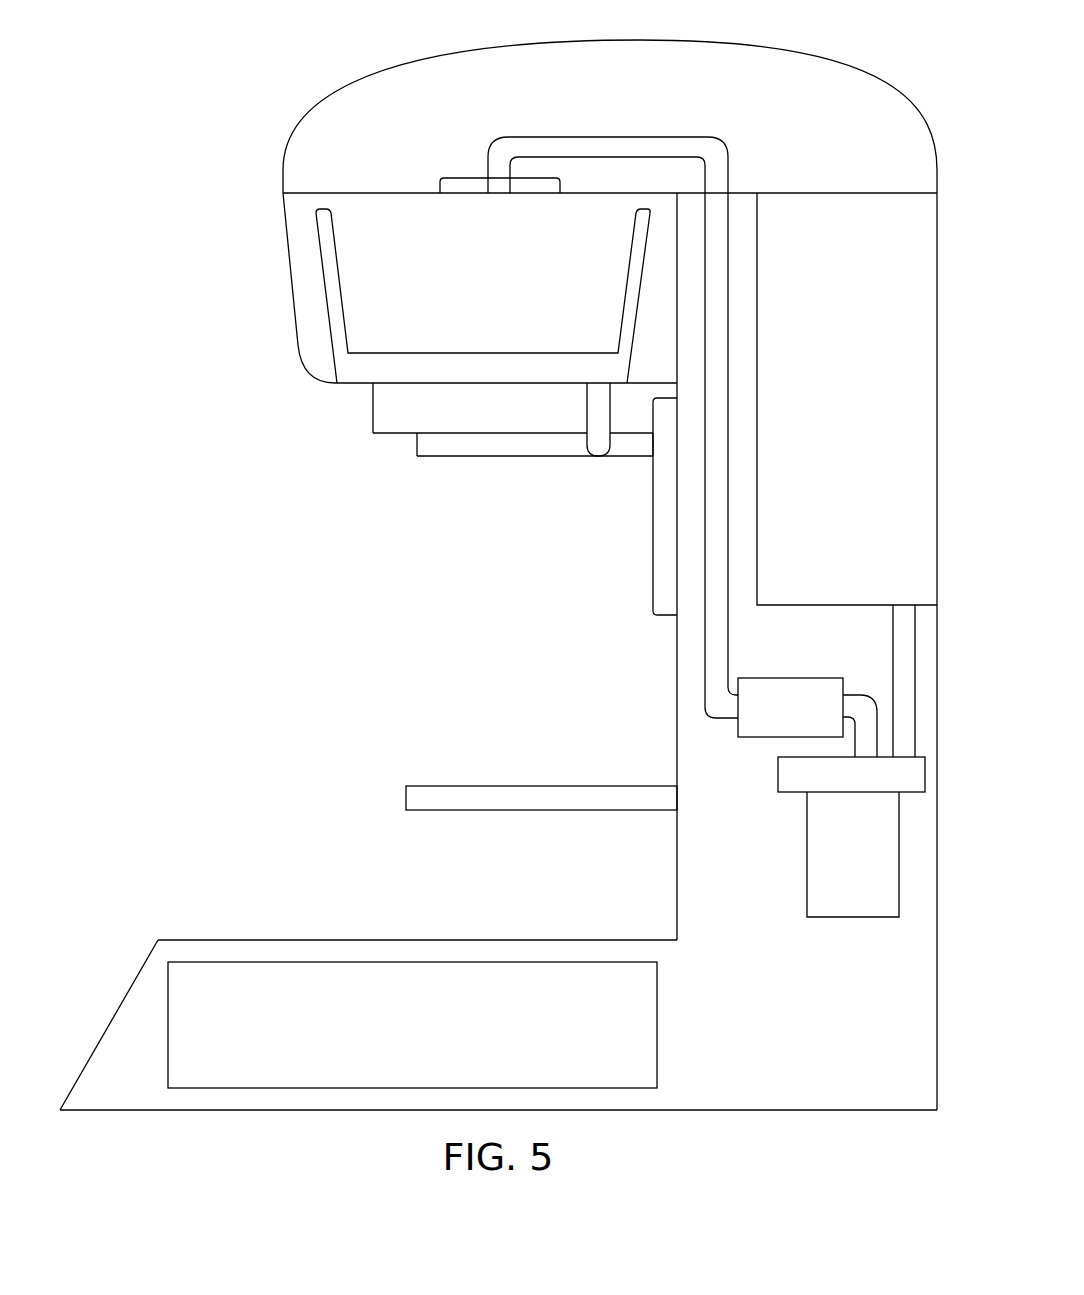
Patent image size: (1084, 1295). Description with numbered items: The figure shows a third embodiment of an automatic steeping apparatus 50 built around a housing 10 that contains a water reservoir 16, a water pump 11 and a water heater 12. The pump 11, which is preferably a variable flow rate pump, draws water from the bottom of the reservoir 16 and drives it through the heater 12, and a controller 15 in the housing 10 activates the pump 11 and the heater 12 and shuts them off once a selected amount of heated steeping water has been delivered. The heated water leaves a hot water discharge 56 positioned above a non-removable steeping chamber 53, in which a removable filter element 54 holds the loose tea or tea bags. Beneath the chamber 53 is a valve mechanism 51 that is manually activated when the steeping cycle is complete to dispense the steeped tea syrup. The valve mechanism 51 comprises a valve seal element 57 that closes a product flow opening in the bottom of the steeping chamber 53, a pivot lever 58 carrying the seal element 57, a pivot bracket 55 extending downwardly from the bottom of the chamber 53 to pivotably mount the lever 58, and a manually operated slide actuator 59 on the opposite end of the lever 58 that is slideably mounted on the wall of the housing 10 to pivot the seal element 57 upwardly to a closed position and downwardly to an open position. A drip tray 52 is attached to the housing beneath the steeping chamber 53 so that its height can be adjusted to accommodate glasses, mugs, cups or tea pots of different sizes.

The housing 10 is at (804, 1117).
The water pump 11 is at (867, 946).
The water heater 12 is at (800, 649).
The controller 15 is at (400, 1067).
The water reservoir 16 is at (836, 443).
The automatic steeping apparatus 50 is at (328, 63).
The valve mechanism 51 is at (533, 466).
The drip tray 52 is at (540, 804).
The steeping chamber 53 is at (293, 349).
The filter element 54 is at (310, 241).
The pivot bracket 55 is at (598, 454).
The hot water discharge 56 is at (448, 186).
The valve seal element 57 is at (380, 408).
The pivot lever 58 is at (463, 457).
The slide actuator 59 is at (662, 530).